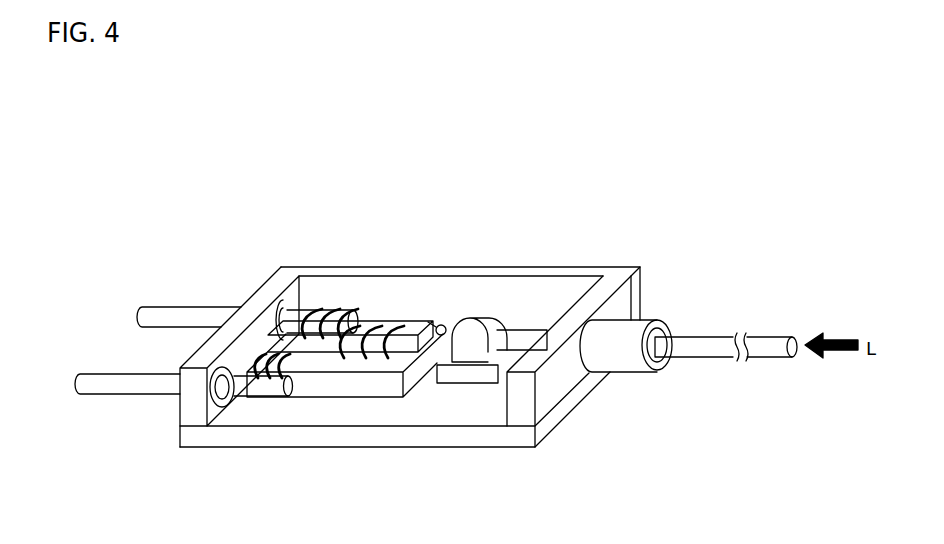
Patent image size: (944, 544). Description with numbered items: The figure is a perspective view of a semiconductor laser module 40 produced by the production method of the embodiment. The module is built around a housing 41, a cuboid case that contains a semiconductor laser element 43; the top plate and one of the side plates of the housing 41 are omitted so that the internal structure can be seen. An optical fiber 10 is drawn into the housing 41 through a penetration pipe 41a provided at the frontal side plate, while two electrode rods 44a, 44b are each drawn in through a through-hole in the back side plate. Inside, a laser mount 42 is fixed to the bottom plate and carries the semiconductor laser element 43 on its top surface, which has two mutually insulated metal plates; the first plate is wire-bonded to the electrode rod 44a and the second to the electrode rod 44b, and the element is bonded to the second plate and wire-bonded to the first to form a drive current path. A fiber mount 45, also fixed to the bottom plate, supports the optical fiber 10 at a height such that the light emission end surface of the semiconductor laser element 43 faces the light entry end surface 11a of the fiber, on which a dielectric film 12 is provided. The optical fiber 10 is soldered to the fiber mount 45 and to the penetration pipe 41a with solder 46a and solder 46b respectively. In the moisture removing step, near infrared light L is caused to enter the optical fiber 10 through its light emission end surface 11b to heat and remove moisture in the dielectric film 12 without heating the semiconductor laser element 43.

The semiconductor laser module 40 is at (608, 230).
The housing 41 is at (437, 437).
The penetration pipe 41a is at (630, 358).
The laser mount 42 is at (330, 386).
The semiconductor laser element 43 is at (384, 314).
The electrode rod 44a is at (104, 381).
The electrode rod 44b is at (163, 310).
The fiber mount 45 is at (482, 376).
The solder 46a is at (472, 338).
The solder 46b is at (668, 362).
The optical fiber 10 is at (700, 340).
The light emission end surface 11b is at (797, 337).
The dielectric film 12 is at (440, 325).
The light entry end surface 11a is at (360, 287).